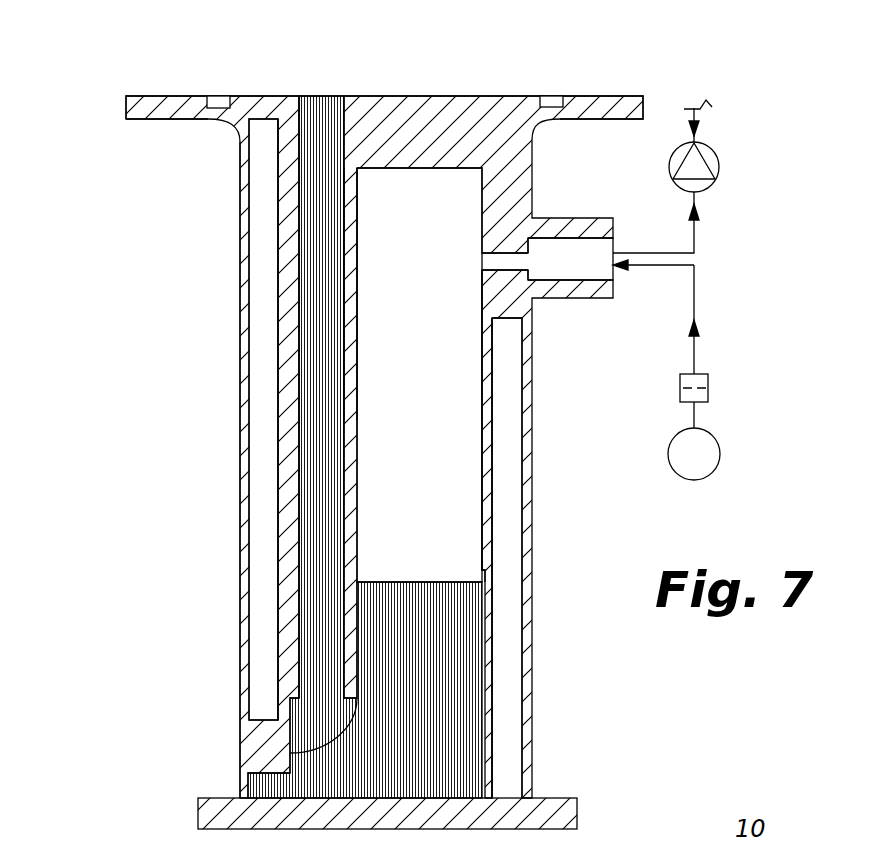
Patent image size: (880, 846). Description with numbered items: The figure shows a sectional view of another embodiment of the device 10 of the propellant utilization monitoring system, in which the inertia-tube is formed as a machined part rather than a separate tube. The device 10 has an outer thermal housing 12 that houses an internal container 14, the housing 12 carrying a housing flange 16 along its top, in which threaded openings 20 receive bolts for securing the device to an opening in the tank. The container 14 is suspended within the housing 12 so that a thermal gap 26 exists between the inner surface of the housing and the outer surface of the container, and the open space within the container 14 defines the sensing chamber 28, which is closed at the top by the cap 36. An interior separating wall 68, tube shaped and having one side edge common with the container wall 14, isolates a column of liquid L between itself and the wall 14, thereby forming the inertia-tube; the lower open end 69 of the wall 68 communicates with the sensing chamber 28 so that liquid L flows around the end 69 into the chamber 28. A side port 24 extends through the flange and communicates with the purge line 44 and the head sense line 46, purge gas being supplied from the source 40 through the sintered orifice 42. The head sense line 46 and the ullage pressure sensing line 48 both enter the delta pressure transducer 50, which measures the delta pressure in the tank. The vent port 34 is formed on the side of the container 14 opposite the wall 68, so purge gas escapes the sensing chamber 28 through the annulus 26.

The device 10 is at (113, 53).
The outer thermal housing 12 is at (239, 558).
The internal container 14 is at (279, 433).
The housing flange 16 is at (170, 120).
The threaded openings 20 is at (220, 106).
The side port 24 is at (553, 280).
The thermal gap 26 is at (263, 334).
The sensing chamber 28 is at (443, 494).
The vent port 34 is at (492, 562).
The cap 36 is at (418, 115).
The purge gas source 40 is at (720, 451).
The sintered orifice 42 is at (709, 388).
The purge line 44 is at (696, 342).
The head sense line 46 is at (694, 233).
The ullage pressure sensing line 48 is at (697, 122).
The delta pressure transducer 50 is at (719, 158).
The interior separating wall 68 is at (358, 290).
The lower open end 69 is at (290, 755).
The liquid L is at (318, 98).